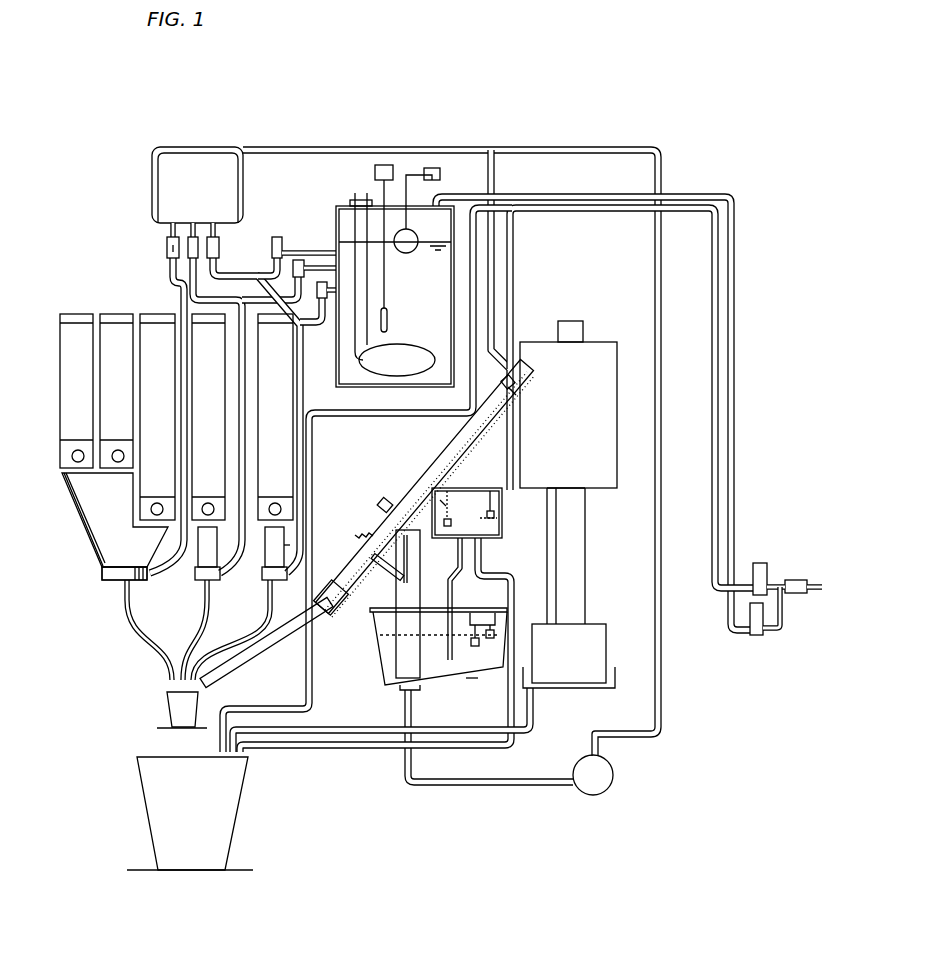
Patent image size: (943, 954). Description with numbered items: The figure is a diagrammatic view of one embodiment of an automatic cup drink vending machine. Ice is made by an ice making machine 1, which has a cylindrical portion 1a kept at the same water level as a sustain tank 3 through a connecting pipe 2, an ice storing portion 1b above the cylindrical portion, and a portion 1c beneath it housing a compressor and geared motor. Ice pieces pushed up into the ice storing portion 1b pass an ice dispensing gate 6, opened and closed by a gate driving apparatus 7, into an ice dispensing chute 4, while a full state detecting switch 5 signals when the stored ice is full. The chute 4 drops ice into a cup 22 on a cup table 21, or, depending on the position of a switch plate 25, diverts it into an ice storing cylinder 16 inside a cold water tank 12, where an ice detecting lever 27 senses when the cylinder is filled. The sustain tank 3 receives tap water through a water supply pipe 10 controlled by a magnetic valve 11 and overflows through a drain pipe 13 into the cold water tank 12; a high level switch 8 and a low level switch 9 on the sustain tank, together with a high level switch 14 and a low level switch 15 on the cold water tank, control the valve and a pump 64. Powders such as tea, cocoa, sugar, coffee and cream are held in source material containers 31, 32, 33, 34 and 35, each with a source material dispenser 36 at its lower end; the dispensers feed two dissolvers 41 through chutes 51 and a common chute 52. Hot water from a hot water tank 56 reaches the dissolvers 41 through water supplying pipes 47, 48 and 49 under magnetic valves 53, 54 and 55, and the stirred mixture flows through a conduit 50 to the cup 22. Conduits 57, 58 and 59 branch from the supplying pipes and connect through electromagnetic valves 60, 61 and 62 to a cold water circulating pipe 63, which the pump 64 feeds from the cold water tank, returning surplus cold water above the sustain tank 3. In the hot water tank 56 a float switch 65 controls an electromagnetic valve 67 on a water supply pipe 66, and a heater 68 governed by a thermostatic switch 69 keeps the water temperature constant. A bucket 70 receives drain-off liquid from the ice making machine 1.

The ice making machine 1 is at (627, 489).
The cylindrical portion 1a is at (585, 498).
The ice storing portion 1b is at (617, 400).
The housing portion 1c is at (581, 665).
The connecting pipe 2 is at (511, 580).
The sustain tank 3 is at (500, 530).
The ice dispensing chute 4 is at (460, 462).
The full state detecting switch 5 is at (570, 321).
The ice dispensing gate 6 is at (524, 424).
The gate driving apparatus 7 is at (512, 384).
The high level switch 8 is at (493, 514).
The low level switch 9 is at (442, 518).
The water supply pipe 10 is at (736, 437).
The magnetic valve 11 is at (763, 635).
The cold water tank 12 is at (472, 680).
The drain pipe 13 is at (450, 660).
The high level switch 14 is at (495, 640).
The low level switch 15 is at (495, 645).
The ice storing cylinder 16 is at (376, 650).
The cup table 21 is at (160, 728).
The cup 22 is at (167, 705).
The switch plate 25 is at (367, 530).
The ice detecting lever 27 is at (400, 572).
The source material container 31 is at (268, 348).
The source material container 32 is at (212, 360).
The source material container 33 is at (153, 377).
The source material container 34 is at (113, 397).
The source material container 35 is at (73, 423).
The source material dispenser 36 is at (270, 513).
The dissolver 41 is at (102, 570).
The water supplying pipe 47 is at (305, 437).
The water supplying pipe 48 is at (243, 460).
The water supplying pipe 49 is at (130, 590).
The conduit 50 is at (193, 665).
The chute 51 is at (287, 547).
The common chute 52 is at (92, 526).
The magnetic valve 53 is at (322, 282).
The magnetic valve 54 is at (298, 260).
The magnetic valve 55 is at (277, 237).
The hot water tank 56 is at (454, 262).
The conduit 57 is at (258, 274).
The conduit 58 is at (190, 268).
The conduit 59 is at (172, 282).
The electromagnetic valve 60 is at (213, 237).
The electromagnetic valve 61 is at (193, 237).
The electromagnetic valve 62 is at (167, 245).
The cold water circulating pipe 63 is at (318, 147).
The pump 64 is at (613, 775).
The float switch 65 is at (440, 168).
The water supply pipe 66 is at (535, 193).
The electromagnetic valve 67 is at (767, 563).
The heater 68 is at (420, 350).
The thermostatic switch 69 is at (380, 165).
The bucket 70 is at (140, 800).